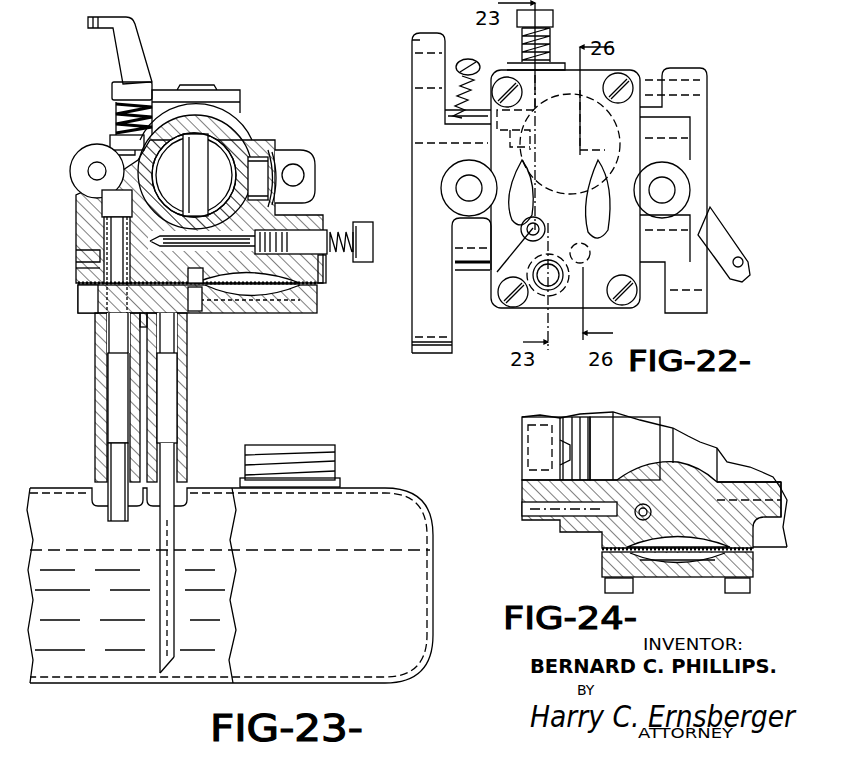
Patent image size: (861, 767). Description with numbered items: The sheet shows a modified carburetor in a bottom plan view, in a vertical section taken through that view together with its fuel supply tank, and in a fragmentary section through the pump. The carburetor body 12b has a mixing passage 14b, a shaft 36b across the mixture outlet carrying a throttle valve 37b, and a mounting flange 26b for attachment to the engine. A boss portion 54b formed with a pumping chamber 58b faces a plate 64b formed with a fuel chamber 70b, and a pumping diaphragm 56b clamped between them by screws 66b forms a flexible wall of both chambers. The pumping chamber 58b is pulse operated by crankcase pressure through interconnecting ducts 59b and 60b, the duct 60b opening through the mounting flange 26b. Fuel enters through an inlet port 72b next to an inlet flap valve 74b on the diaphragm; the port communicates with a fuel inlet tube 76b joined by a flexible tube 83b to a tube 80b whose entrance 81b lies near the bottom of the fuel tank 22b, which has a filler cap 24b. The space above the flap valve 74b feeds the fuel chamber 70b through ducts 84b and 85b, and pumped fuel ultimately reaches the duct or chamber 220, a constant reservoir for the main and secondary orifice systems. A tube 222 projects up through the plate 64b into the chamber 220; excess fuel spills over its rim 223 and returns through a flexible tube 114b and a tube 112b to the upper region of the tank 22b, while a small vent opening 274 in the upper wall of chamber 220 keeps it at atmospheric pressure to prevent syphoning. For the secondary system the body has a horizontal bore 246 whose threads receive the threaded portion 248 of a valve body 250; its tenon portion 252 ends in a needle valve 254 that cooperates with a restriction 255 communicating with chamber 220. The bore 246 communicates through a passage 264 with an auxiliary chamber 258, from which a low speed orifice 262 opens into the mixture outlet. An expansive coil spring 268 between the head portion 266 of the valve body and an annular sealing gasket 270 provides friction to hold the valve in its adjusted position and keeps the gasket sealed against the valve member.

In FIG. 23, the carburetor body 12b is at (230, 117).
In FIG. 22, the carburetor body 12b is at (597, 161).
In FIG. 24, the carburetor body 12b is at (707, 443).
In FIG. 24, the mixing passage 14b is at (647, 429).
In FIG. 23, the fuel tank 22b is at (348, 488).
In FIG. 23, the filler cap 24b is at (318, 445).
In FIG. 22, the mounting flange 26b is at (427, 40).
In FIG. 24, the shaft 36b is at (590, 421).
In FIG. 24, the throttle valve 37b is at (563, 417).
In FIG. 23, the boss portion 54b is at (82, 284).
In FIG. 24, the boss portion 54b is at (750, 545).
In FIG. 23, the pumping diaphragm 56b is at (240, 290).
In FIG. 24, the pumping diaphragm 56b is at (690, 560).
In FIG. 23, the pumping chamber 58b is at (245, 286).
In FIG. 24, the pumping chamber 58b is at (710, 556).
In FIG. 24, the duct 59b is at (615, 525).
In FIG. 24, the duct 60b is at (545, 512).
In FIG. 23, the plate 64b is at (305, 292).
In FIG. 24, the plate 64b is at (753, 572).
In FIG. 22, the screws 66b is at (500, 297).
In FIG. 24, the screws 66b is at (742, 585).
In FIG. 23, the fuel chamber 70b is at (262, 285).
In FIG. 24, the fuel chamber 70b is at (672, 560).
In FIG. 23, the inlet port 72b is at (86, 300).
In FIG. 23, the inlet flap valve 74b is at (82, 268).
In FIG. 23, the fuel inlet tube 76b is at (190, 320).
In FIG. 22, the fuel inlet tube 76b is at (512, 255).
In FIG. 23, the tube 80b is at (177, 520).
In FIG. 23, the entrance 81b is at (170, 668).
In FIG. 23, the flexible tube 83b is at (186, 398).
In FIG. 23, the duct 84b is at (200, 306).
In FIG. 23, the duct 85b is at (215, 295).
In FIG. 23, the tube 112b is at (106, 455).
In FIG. 23, the flexible tube 114b is at (96, 376).
In FIG. 23, the duct or chamber 220 is at (98, 242).
In FIG. 23, the tube 222 is at (100, 232).
In FIG. 22, the tube 222 is at (540, 290).
In FIG. 23, the rim 223 is at (104, 225).
In FIG. 23, the horizontal bore 246 is at (176, 236).
In FIG. 23, the threaded portion 248 is at (277, 218).
In FIG. 23, the valve body 250 is at (305, 240).
In FIG. 23, the tenon portion 252 is at (208, 247).
In FIG. 23, the needle valve 254 is at (102, 212).
In FIG. 23, the restriction 255 is at (98, 257).
In FIG. 23, the auxiliary chamber 258 is at (245, 183).
In FIG. 23, the low speed orifice 262 is at (245, 200).
In FIG. 23, the passage 264 is at (306, 193).
In FIG. 23, the head portion 266 is at (352, 258).
In FIG. 23, the expansive coil spring 268 is at (325, 262).
In FIG. 23, the annular sealing gasket 270 is at (322, 280).
In FIG. 23, the vent opening 274 is at (95, 160).